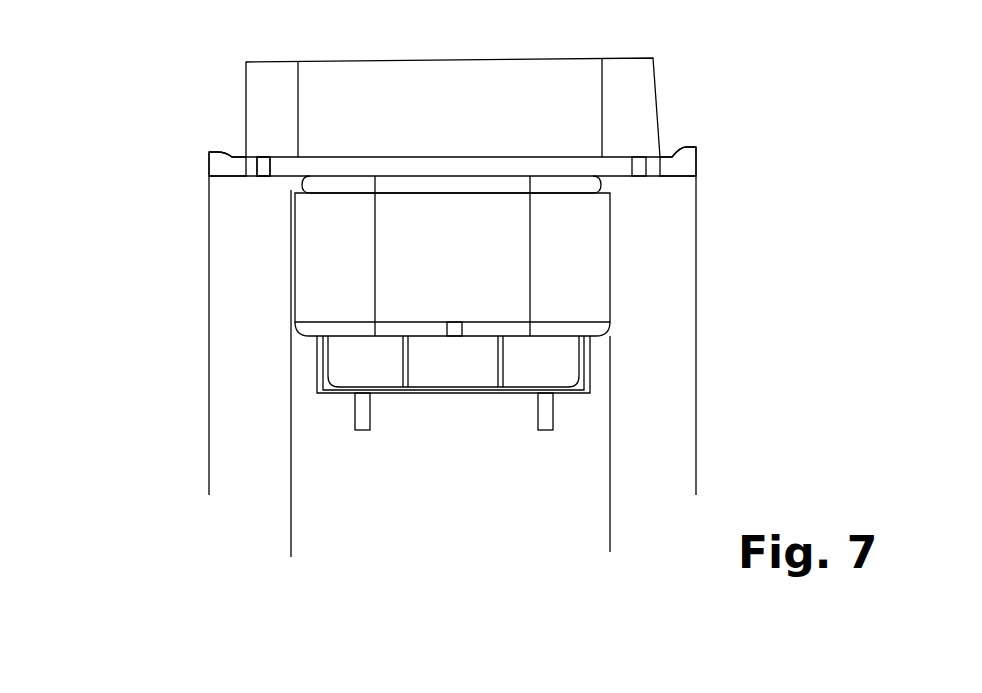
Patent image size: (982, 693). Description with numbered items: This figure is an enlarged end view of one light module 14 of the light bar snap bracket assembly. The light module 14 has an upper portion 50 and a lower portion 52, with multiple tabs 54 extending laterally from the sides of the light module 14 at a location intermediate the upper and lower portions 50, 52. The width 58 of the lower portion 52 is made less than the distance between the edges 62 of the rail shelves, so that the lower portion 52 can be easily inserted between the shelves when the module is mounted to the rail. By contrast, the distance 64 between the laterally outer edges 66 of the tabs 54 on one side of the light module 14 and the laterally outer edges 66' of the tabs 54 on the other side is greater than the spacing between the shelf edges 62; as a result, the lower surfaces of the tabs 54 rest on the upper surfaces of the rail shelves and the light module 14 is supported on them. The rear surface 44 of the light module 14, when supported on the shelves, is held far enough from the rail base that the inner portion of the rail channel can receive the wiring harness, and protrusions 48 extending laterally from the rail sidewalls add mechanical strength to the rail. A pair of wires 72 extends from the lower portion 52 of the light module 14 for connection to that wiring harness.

The light module 14 is at (158, 120).
The rear surface 44 is at (448, 395).
The protrusions 48 is at (220, 180).
The upper portion 50 is at (660, 66).
The lower portion 52 is at (612, 262).
The tabs 54 is at (688, 147).
The width 58 is at (610, 542).
The edges 62 is at (246, 128).
The distance 64 is at (209, 492).
The laterally outer edges 66 is at (179, 173).
The laterally outer edges 66' is at (718, 160).
The wires 72 is at (360, 432).